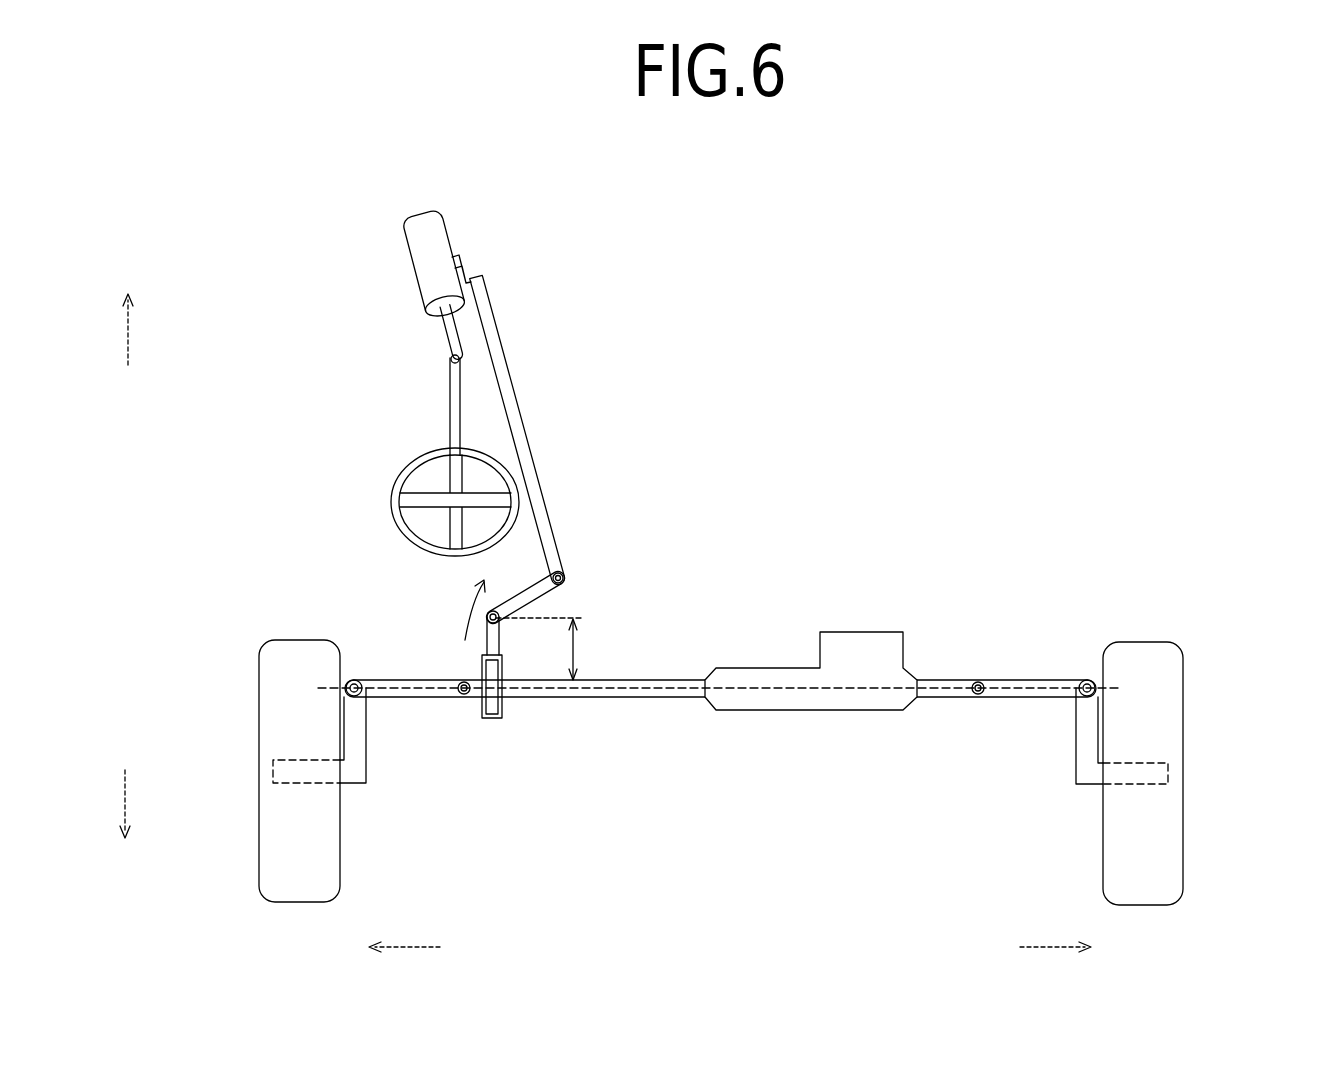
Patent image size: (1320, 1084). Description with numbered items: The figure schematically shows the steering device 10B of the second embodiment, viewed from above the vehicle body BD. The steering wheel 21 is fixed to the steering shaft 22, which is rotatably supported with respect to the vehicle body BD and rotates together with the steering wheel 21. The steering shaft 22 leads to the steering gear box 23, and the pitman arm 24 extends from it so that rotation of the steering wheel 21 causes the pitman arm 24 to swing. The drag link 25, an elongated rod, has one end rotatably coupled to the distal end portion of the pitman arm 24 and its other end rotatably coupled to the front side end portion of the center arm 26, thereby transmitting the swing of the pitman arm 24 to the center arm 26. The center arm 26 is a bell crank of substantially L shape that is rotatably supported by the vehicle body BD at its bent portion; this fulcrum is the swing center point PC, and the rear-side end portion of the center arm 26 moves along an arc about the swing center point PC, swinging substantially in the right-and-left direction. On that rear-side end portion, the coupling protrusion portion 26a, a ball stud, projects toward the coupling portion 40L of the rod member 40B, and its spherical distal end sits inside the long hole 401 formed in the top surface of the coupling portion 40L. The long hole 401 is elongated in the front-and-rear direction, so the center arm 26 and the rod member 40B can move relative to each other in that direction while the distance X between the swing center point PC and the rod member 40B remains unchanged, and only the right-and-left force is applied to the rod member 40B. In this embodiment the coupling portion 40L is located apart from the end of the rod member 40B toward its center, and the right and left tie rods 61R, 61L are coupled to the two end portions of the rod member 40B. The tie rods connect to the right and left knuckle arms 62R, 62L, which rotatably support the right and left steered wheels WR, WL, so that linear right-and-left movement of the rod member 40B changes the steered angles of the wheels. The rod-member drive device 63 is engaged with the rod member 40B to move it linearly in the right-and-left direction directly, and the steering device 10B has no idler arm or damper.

The steering device 10B is at (230, 256).
The steering wheel 21 is at (392, 492).
The steering shaft 22 is at (452, 410).
The steering gear box 23 is at (410, 255).
The pitman arm 24 is at (468, 262).
The drag link 25 is at (508, 350).
The center arm 26 is at (518, 588).
The coupling protrusion portion 26a is at (508, 706).
The coupling portion 40L is at (500, 722).
The long hole 401 is at (490, 722).
The rod member 40B is at (625, 698).
The left tie rod 61L is at (410, 677).
The right tie rod 61R is at (1035, 678).
The left knuckle arm 62L is at (345, 720).
The right knuckle arm 62R is at (1090, 736).
The rod-member drive device 63 is at (803, 712).
The left steered wheel WL is at (262, 820).
The right steered wheel WR is at (1184, 856).
The swing center point PC is at (512, 613).
The vehicle body BD is at (478, 606).
The distance X is at (542, 649).